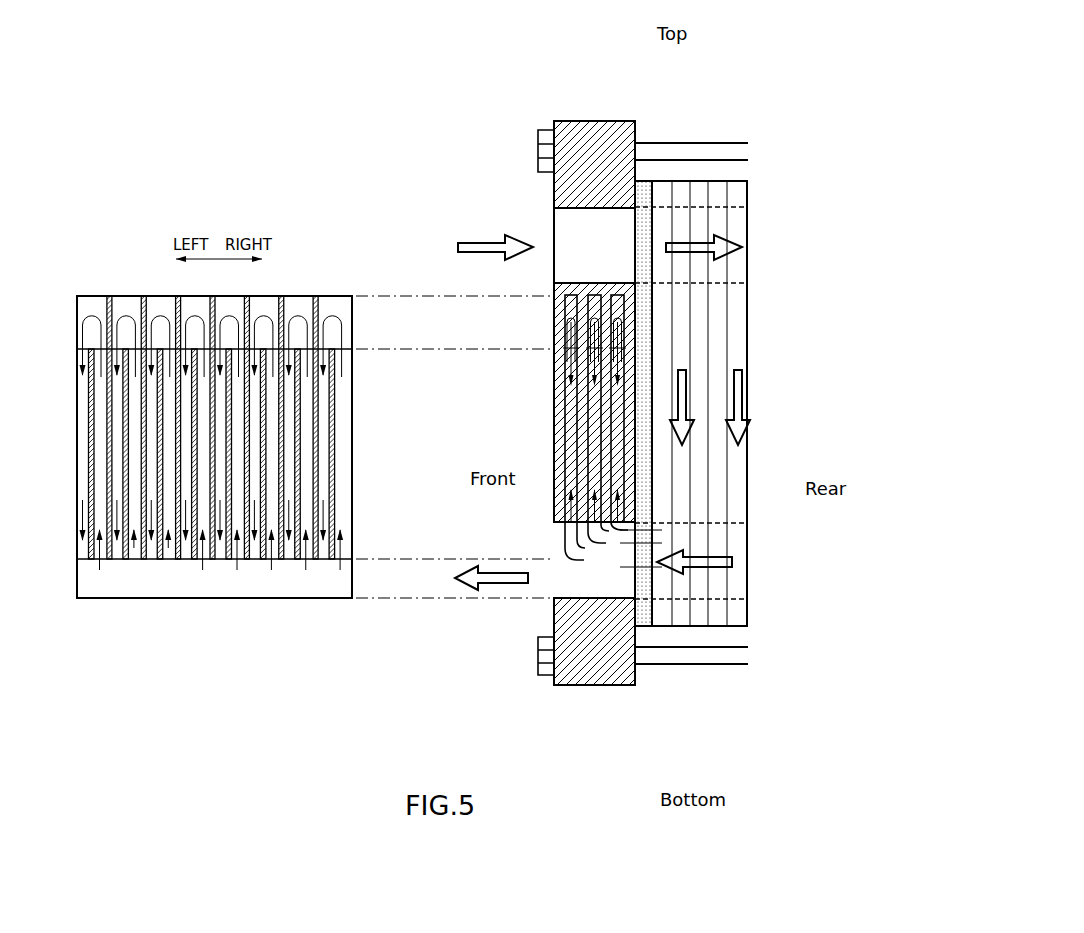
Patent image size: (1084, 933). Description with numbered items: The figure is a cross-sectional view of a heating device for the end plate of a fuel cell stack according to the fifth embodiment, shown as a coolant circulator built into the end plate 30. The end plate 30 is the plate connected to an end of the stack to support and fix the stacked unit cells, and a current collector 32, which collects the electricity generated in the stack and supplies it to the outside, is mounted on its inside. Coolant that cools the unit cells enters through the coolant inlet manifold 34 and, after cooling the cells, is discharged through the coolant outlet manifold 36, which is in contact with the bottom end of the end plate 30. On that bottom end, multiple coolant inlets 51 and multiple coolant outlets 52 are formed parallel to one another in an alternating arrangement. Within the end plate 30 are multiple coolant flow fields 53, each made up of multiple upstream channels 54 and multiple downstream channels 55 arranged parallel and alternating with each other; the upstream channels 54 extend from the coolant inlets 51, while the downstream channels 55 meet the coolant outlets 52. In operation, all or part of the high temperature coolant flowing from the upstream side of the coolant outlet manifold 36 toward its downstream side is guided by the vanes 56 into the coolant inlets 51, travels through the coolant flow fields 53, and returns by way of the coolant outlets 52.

The end plate 30 is at (587, 690).
The current collector 32 is at (640, 311).
The coolant inlet manifold 34 is at (664, 210).
The coolant outlet manifold 36 is at (662, 630).
The coolant inlets 51 is at (270, 548).
The coolant outlets 52 is at (291, 548).
The coolant flow fields 53 is at (262, 447).
The upstream channels 54 is at (308, 427).
The downstream channels 55 is at (290, 399).
The vanes 56 is at (612, 598).